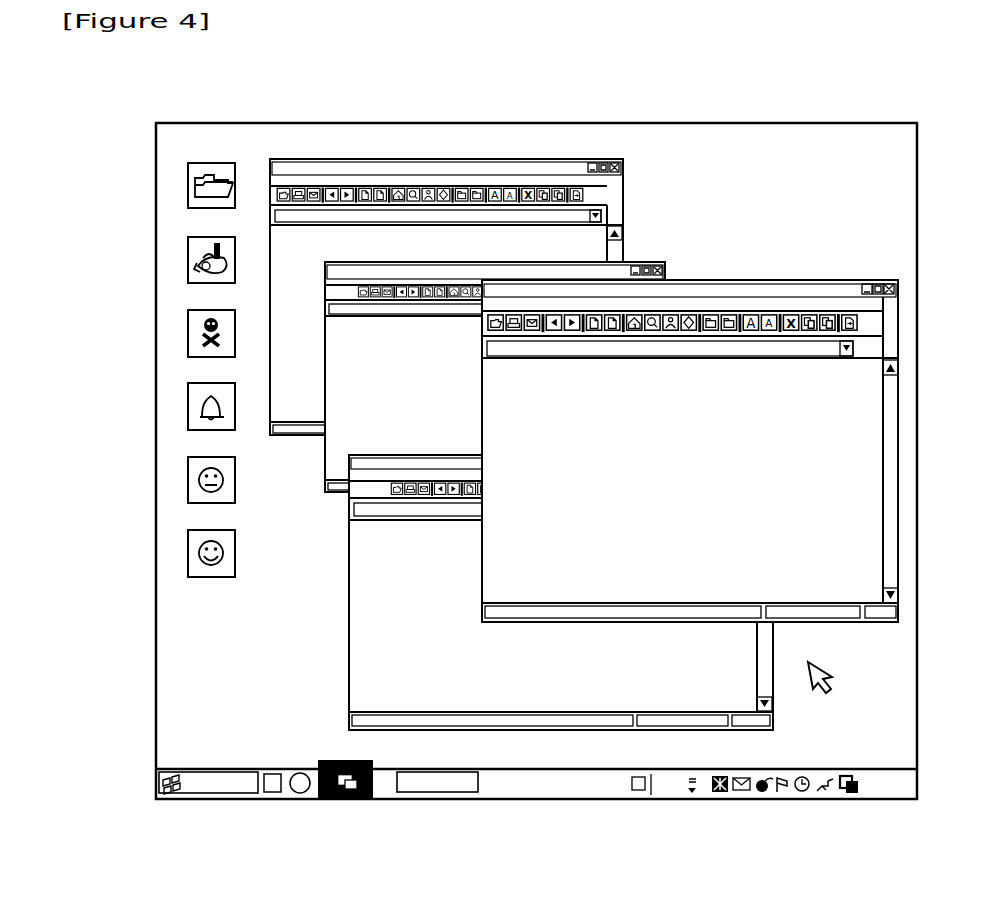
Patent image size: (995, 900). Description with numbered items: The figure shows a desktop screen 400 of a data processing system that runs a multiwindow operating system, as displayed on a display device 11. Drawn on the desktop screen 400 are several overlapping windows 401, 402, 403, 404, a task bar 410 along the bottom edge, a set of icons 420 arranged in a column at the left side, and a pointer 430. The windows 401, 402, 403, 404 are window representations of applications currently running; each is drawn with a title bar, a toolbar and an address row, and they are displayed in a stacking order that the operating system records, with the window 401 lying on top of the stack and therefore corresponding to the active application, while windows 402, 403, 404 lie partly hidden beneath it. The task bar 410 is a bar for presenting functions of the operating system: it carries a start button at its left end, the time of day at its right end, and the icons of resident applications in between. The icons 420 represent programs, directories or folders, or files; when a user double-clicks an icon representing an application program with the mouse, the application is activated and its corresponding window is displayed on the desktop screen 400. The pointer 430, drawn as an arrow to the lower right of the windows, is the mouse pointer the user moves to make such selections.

The display device 11 is at (726, 122).
The desktop screen 400 is at (512, 484).
The window 401 is at (755, 287).
The window 402 is at (350, 597).
The window 403 is at (323, 469).
The window 404 is at (311, 431).
The task bar 410 is at (498, 790).
The icons 420 is at (182, 349).
The pointer 430 is at (826, 688).